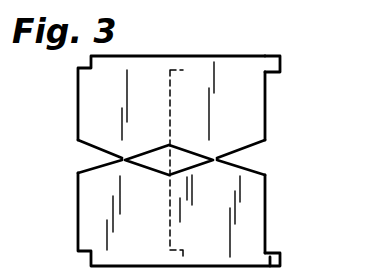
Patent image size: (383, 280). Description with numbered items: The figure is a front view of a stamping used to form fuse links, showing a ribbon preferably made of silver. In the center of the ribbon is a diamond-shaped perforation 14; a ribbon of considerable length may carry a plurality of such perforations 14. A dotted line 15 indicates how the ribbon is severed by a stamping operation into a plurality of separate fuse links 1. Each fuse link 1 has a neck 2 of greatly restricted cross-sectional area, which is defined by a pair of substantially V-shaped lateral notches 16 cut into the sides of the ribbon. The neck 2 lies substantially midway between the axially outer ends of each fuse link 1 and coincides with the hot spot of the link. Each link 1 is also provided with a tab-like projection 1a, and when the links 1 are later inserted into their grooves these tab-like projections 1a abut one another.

The fuse link 1 is at (107, 102).
The tab-like projection 1a is at (262, 62).
The neck 2 is at (120, 158).
The diamond-shaped perforation 14 is at (176, 152).
The dotted line 15 is at (170, 85).
The V-shaped lateral notches 16 is at (86, 167).